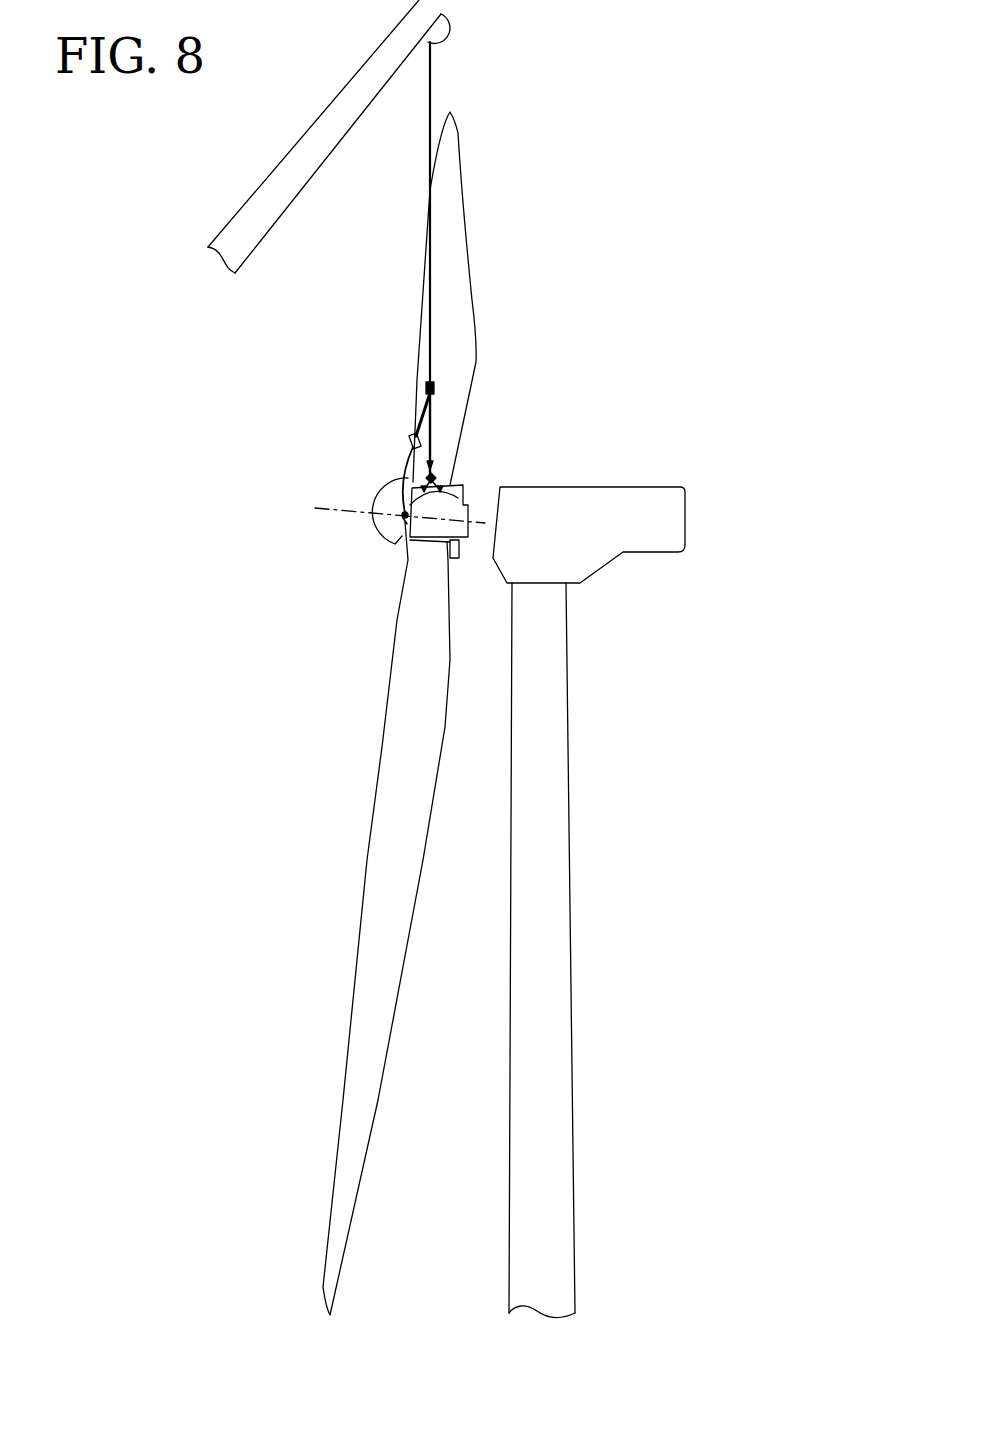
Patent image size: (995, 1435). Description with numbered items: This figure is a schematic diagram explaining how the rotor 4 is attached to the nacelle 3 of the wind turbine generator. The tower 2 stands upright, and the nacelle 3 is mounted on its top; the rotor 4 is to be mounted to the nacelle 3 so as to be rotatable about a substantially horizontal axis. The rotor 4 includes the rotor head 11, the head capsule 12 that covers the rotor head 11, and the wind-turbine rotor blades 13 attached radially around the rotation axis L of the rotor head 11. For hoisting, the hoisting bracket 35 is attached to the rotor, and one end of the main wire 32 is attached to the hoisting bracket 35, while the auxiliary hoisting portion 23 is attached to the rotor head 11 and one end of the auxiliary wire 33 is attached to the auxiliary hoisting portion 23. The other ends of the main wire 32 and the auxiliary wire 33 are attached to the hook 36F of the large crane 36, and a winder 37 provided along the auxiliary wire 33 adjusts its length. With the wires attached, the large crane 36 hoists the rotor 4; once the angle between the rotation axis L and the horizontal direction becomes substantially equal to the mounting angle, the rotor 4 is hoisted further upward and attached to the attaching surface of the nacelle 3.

The tower 2 is at (567, 940).
The nacelle 3 is at (686, 518).
The rotor 4 is at (278, 444).
The rotor head 11 is at (468, 542).
The head capsule 12 is at (375, 508).
The wind-turbine rotor blade 13 is at (455, 232).
The auxiliary hoisting portion 23 is at (403, 520).
The main wire 32 is at (432, 430).
The auxiliary wire 33 is at (423, 418).
The hoisting bracket 35 is at (437, 478).
The large crane 36 is at (315, 140).
The hook 36F is at (434, 388).
The winder (wire-length adjusting portion) 37 is at (410, 442).
The rotation axis L is at (345, 510).